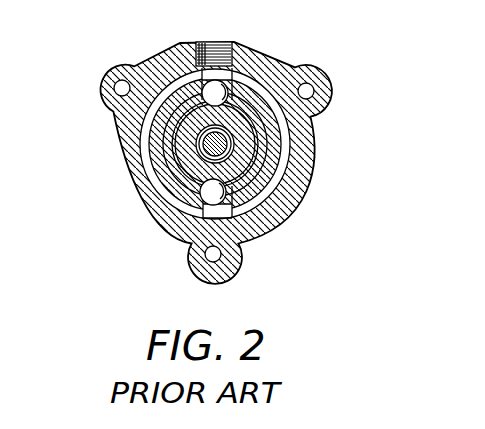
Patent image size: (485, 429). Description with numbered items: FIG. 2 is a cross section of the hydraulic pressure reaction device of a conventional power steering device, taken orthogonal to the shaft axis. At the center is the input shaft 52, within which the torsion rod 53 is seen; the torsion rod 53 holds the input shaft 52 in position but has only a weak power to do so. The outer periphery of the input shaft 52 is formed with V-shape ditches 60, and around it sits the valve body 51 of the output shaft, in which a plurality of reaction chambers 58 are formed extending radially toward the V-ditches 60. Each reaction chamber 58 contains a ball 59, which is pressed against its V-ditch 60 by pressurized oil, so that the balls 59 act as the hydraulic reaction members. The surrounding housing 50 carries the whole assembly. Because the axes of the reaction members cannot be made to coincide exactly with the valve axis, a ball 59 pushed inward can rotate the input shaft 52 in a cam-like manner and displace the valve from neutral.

The housing flange 50 is at (269, 213).
The valve body 51 is at (168, 165).
The input shaft 52 is at (178, 130).
The torsion rod 53 is at (220, 149).
The reaction chamber 58 is at (194, 60).
The ball 59 is at (222, 86).
The V-shape ditch 60 is at (228, 106).